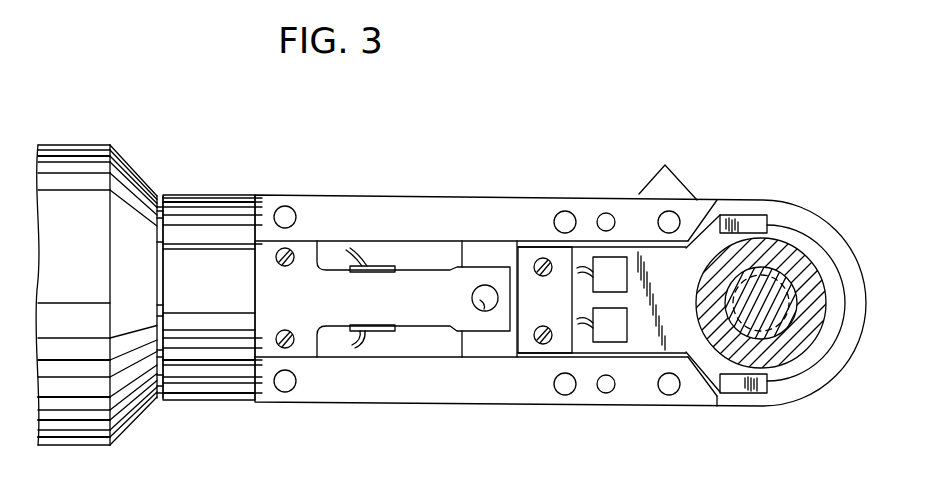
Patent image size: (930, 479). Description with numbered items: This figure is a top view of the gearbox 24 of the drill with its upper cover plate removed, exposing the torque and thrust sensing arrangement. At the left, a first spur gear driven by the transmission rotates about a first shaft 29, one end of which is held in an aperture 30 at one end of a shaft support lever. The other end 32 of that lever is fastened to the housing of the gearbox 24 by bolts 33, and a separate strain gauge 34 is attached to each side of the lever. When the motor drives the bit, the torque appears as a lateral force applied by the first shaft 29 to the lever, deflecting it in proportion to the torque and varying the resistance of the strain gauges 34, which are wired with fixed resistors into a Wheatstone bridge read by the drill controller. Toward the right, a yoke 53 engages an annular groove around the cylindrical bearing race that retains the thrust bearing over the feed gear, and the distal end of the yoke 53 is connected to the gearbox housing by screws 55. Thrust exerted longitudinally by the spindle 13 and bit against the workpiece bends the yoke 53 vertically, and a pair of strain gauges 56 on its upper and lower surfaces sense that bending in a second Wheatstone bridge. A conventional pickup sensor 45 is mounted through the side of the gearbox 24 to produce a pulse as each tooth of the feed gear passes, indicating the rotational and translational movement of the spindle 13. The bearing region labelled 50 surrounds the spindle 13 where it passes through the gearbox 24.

The spindle 13 is at (771, 283).
The gearbox 24 is at (441, 194).
The first shaft 29 is at (472, 297).
The aperture 30 is at (483, 306).
The other end of the shaft support lever 32 is at (268, 296).
The bolts 33 is at (276, 258).
The strain gauge 34 is at (368, 272).
The pickup sensor 45 is at (668, 182).
The bearing ring 50 is at (814, 268).
The yoke 53 is at (750, 221).
The screws 55 is at (541, 275).
The strain gauges 56 is at (612, 323).